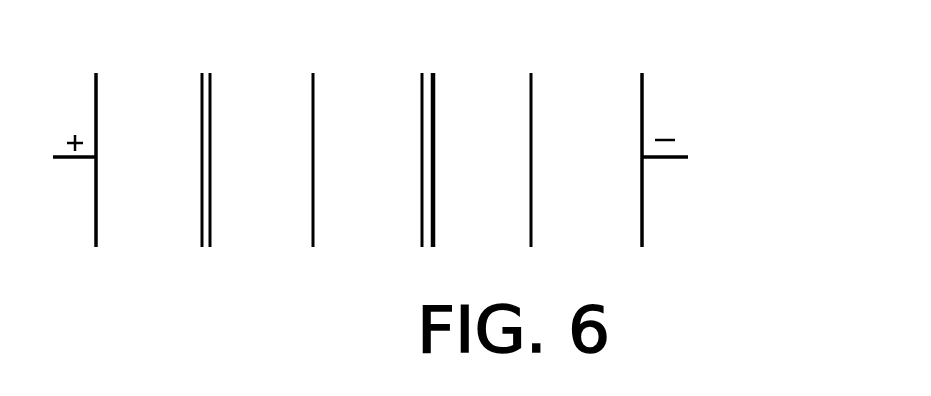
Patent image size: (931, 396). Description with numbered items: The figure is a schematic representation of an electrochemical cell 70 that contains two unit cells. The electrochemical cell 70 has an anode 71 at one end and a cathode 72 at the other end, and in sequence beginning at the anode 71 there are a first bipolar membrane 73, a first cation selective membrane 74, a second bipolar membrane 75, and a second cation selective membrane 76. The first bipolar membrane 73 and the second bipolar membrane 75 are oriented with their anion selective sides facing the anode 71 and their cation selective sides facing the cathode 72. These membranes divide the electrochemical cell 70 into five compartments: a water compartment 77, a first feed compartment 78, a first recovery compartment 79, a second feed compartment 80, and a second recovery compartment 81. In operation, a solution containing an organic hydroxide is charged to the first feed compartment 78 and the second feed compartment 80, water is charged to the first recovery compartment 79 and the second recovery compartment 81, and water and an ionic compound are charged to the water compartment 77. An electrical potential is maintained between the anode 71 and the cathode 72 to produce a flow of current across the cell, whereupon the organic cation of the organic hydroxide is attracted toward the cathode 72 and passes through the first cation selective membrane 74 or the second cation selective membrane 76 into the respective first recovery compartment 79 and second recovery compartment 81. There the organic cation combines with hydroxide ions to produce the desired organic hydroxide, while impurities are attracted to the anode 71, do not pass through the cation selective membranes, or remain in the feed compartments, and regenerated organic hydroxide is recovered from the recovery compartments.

The electrochemical cell 70 is at (420, 164).
The anode 71 is at (79, 142).
The cathode 72 is at (657, 142).
The first bipolar membrane 73 is at (205, 142).
The first cation selective membrane 74 is at (315, 142).
The second bipolar membrane 75 is at (427, 142).
The second cation selective membrane 76 is at (537, 142).
The water compartment 77 is at (150, 235).
The first feed compartment 78 is at (264, 235).
The first recovery compartment 79 is at (371, 235).
The second feed compartment 80 is at (480, 235).
The second recovery compartment 81 is at (587, 235).